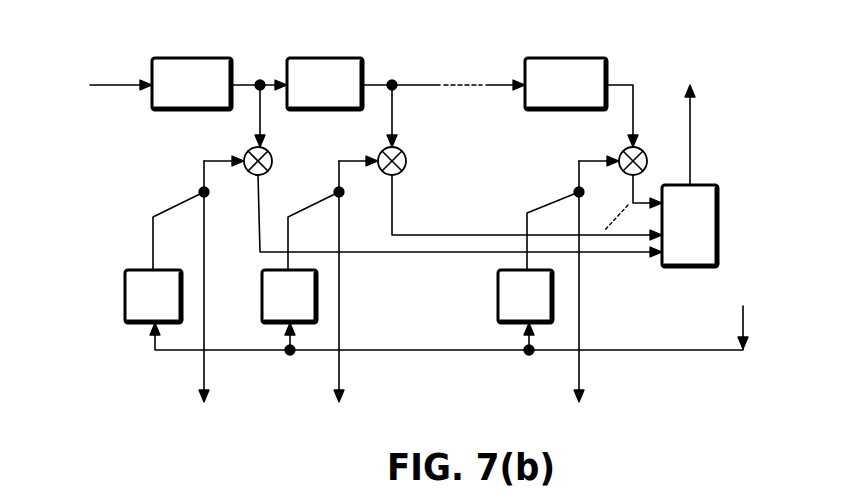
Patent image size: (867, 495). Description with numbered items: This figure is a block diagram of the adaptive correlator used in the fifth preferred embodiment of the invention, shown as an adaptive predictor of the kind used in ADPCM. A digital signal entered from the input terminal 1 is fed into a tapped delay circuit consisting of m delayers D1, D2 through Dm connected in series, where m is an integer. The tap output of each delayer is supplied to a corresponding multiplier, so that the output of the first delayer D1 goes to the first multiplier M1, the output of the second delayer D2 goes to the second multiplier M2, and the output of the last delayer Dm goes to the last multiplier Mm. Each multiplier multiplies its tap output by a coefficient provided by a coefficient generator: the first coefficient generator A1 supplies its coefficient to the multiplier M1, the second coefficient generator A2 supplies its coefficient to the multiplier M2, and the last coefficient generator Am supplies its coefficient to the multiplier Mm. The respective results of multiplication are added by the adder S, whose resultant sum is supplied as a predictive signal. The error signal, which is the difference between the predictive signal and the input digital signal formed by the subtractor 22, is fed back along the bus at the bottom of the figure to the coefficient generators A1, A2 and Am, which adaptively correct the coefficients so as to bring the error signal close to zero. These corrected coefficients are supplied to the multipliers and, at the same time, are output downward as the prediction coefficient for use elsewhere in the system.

The input terminal 1 is at (78, 90).
The subtractor 22 is at (708, 76).
The delayer D1 is at (187, 58).
The delayer D2 is at (320, 58).
The delayer Dm is at (580, 58).
The multiplier M1 is at (272, 170).
The multiplier M2 is at (405, 170).
The multiplier Mm is at (621, 150).
The coefficient generator A1 is at (125, 320).
The coefficient generator A2 is at (262, 320).
The coefficient generator Am is at (498, 285).
The adder S is at (690, 267).